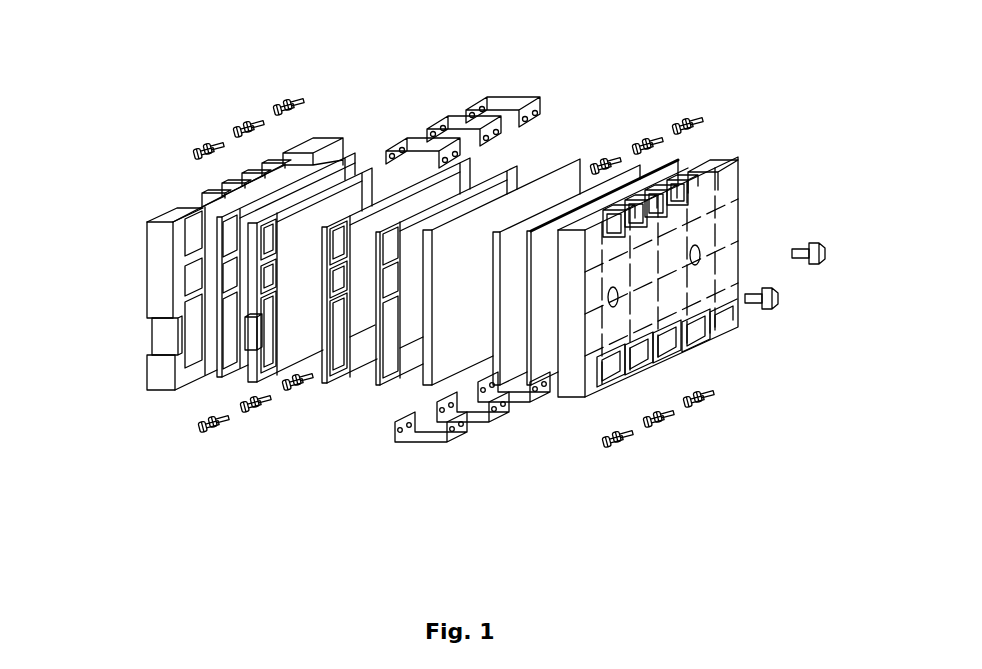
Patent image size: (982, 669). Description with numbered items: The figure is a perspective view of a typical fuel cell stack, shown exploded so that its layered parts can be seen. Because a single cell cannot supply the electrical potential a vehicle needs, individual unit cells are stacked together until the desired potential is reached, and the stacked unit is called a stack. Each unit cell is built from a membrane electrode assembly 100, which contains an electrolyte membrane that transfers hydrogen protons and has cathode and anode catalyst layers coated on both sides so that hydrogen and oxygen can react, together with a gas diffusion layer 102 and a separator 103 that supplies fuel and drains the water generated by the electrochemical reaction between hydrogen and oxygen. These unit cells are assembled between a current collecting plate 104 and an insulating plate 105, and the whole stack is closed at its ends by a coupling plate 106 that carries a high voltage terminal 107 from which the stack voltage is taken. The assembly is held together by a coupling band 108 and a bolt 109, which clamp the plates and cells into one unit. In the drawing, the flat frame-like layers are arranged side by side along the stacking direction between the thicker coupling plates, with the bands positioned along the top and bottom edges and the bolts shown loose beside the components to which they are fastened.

The membrane electrode assembly 100 is at (550, 212).
The gas diffusion layer 102 is at (492, 182).
The separator 103 is at (437, 330).
The current collecting plate 104 is at (295, 338).
The insulating plate 105 is at (226, 325).
The coupling plate 106 is at (158, 290).
The high voltage terminal 107 is at (800, 246).
The coupling band 108 is at (428, 442).
The bolt 109 is at (655, 418).